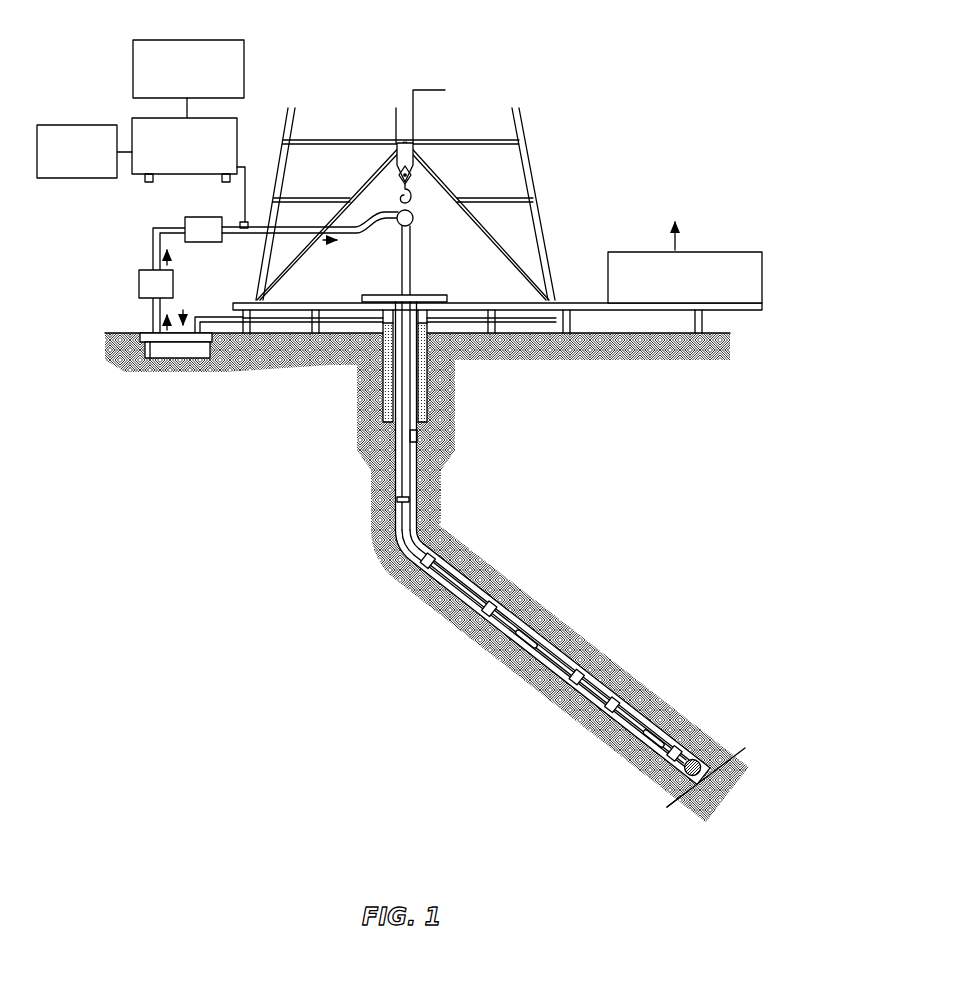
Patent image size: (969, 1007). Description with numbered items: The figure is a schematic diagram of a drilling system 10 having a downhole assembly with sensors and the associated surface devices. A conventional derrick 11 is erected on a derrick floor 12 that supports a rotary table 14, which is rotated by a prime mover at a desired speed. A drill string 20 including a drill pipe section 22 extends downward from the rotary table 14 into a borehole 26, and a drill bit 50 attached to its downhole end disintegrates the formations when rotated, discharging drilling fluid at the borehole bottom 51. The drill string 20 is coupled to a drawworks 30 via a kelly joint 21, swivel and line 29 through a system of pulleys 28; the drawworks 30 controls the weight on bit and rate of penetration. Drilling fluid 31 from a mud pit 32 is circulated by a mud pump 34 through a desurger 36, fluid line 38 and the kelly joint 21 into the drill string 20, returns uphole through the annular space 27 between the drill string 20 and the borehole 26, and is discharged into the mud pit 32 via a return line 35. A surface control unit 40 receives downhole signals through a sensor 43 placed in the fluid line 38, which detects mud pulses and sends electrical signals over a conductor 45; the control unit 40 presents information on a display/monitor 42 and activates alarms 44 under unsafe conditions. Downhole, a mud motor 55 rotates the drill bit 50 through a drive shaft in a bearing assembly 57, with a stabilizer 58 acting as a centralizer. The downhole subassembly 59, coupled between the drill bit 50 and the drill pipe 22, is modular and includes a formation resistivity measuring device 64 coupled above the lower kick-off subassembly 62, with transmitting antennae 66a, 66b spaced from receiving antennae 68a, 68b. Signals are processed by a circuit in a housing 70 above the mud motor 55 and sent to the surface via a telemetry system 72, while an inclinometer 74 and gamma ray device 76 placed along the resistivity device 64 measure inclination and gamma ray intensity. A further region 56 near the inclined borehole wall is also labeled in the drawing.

The drilling system 10 is at (569, 47).
The derrick 11 is at (537, 197).
The derrick floor 12 is at (559, 302).
The rotary table 14 is at (428, 296).
The drill string 20 is at (420, 440).
The kelly joint 21 is at (411, 252).
The drill pipe section 22 is at (397, 493).
The borehole 26 is at (420, 540).
The annular space 27 is at (435, 557).
The system of pulleys 28 is at (395, 224).
The line 29 is at (413, 130).
The drawworks 30 is at (706, 252).
The drilling fluid 31 is at (146, 352).
The mud pit 32 is at (200, 360).
The mud pump 34 is at (139, 283).
The return line 35 is at (271, 322).
The desurger 36 is at (196, 217).
The fluid line 38 is at (240, 236).
The surface control unit 40 is at (237, 118).
The display/monitor 42 is at (203, 40).
The sensor 43 is at (244, 222).
The alarms 44 is at (64, 125).
The conductor 45 is at (248, 166).
The drill bit 50 is at (740, 752).
The borehole bottom 51 is at (672, 808).
The mud motor 55 is at (487, 593).
The wellbore wall 56 is at (520, 610).
The bearing assembly 57 is at (619, 749).
The stabilizer 58 is at (692, 745).
The downhole subassembly 59 is at (529, 554).
The lower kick-off subassembly 62 is at (666, 722).
The formation resistivity measuring device 64 is at (582, 698).
The transmitting antenna 66a is at (540, 663).
The transmitting antenna 66b is at (602, 718).
The receiving antenna 68a is at (556, 684).
The receiving antenna 68b is at (588, 665).
The housing 70 is at (430, 590).
The telemetry system 72 is at (402, 530).
The inclinometer 74 is at (622, 690).
The gamma ray device 76 is at (643, 706).